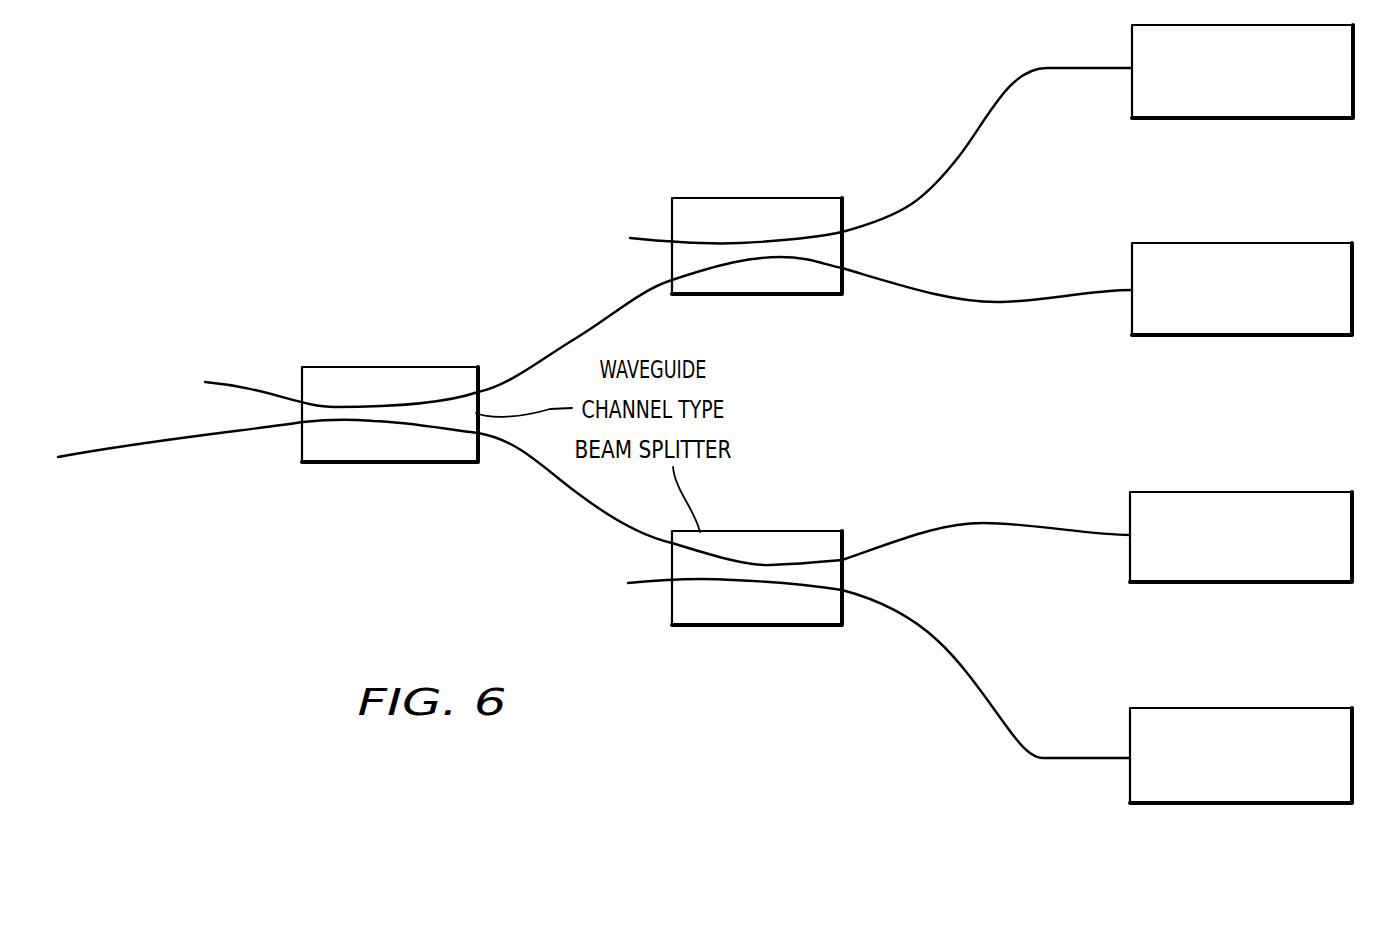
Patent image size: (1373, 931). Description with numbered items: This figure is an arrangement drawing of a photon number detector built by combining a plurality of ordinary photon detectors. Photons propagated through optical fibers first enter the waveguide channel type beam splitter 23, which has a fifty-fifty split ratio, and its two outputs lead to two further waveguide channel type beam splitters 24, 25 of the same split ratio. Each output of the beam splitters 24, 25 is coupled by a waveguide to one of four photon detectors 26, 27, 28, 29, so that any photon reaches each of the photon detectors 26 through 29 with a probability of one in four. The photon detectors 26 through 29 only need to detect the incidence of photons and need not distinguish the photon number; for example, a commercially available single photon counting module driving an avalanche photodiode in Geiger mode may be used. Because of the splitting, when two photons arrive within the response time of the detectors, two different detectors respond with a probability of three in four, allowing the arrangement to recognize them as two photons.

The waveguide channel type beam splitter 23 is at (379, 367).
The waveguide channel type beam splitter 24 is at (748, 200).
The waveguide channel type beam splitter 25 is at (705, 618).
The photon detector 26 is at (1155, 113).
The photon detector 27 is at (1155, 330).
The photon detector 28 is at (1155, 577).
The photon detector 29 is at (1153, 797).